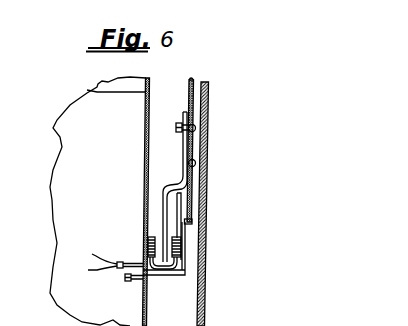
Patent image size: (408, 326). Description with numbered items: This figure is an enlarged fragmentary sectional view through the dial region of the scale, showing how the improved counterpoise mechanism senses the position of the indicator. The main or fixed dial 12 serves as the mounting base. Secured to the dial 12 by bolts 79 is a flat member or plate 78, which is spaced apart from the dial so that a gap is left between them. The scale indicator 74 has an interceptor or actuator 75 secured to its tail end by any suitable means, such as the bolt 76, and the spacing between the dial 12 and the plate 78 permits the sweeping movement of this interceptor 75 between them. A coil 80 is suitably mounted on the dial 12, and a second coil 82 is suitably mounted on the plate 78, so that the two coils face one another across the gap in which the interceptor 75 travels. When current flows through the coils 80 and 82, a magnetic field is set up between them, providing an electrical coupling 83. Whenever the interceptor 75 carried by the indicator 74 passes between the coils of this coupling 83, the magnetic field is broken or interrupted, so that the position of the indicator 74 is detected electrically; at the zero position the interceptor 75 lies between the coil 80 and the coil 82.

The main dial 12 is at (87, 90).
The scale indicator 74 is at (195, 79).
The interceptor 75 is at (164, 201).
The bolt 76 is at (193, 125).
The plate 78 is at (181, 229).
The bolts 79 is at (129, 281).
The coil 80 is at (148, 240).
The coil 82 is at (181, 250).
The electrical coupling 83 is at (180, 261).